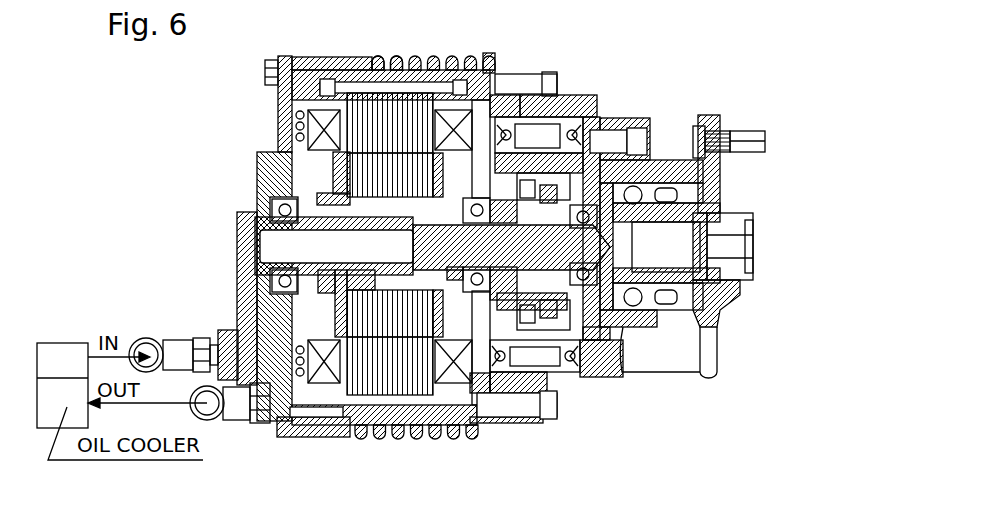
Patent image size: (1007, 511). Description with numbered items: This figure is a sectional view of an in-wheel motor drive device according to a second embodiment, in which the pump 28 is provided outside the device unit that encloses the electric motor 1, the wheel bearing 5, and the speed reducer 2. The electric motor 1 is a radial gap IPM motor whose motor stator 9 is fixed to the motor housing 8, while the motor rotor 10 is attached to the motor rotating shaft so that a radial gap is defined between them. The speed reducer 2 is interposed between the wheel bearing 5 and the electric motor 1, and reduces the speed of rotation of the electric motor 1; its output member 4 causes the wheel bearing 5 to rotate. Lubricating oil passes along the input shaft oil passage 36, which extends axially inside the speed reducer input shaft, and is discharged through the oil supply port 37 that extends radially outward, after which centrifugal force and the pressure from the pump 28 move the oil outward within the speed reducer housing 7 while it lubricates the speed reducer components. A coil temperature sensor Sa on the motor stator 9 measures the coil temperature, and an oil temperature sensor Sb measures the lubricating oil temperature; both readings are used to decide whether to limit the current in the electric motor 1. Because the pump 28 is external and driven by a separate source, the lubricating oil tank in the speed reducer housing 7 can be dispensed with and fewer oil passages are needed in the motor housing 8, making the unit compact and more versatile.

The electric motor 1 is at (363, 58).
The motor stator 9 is at (378, 66).
The motor housing 8 is at (404, 66).
The speed reducer 2 is at (578, 82).
The speed reducer housing 7 is at (586, 106).
The wheel bearing 5 is at (728, 119).
The motor rotor 10 is at (362, 177).
The input shaft oil passage 36 is at (416, 240).
The output member 4 is at (680, 256).
The oil supply port 37 is at (597, 372).
The pump 28 is at (61, 350).
The coil temperature sensor Sa is at (335, 387).
The oil temperature sensor Sb is at (536, 418).